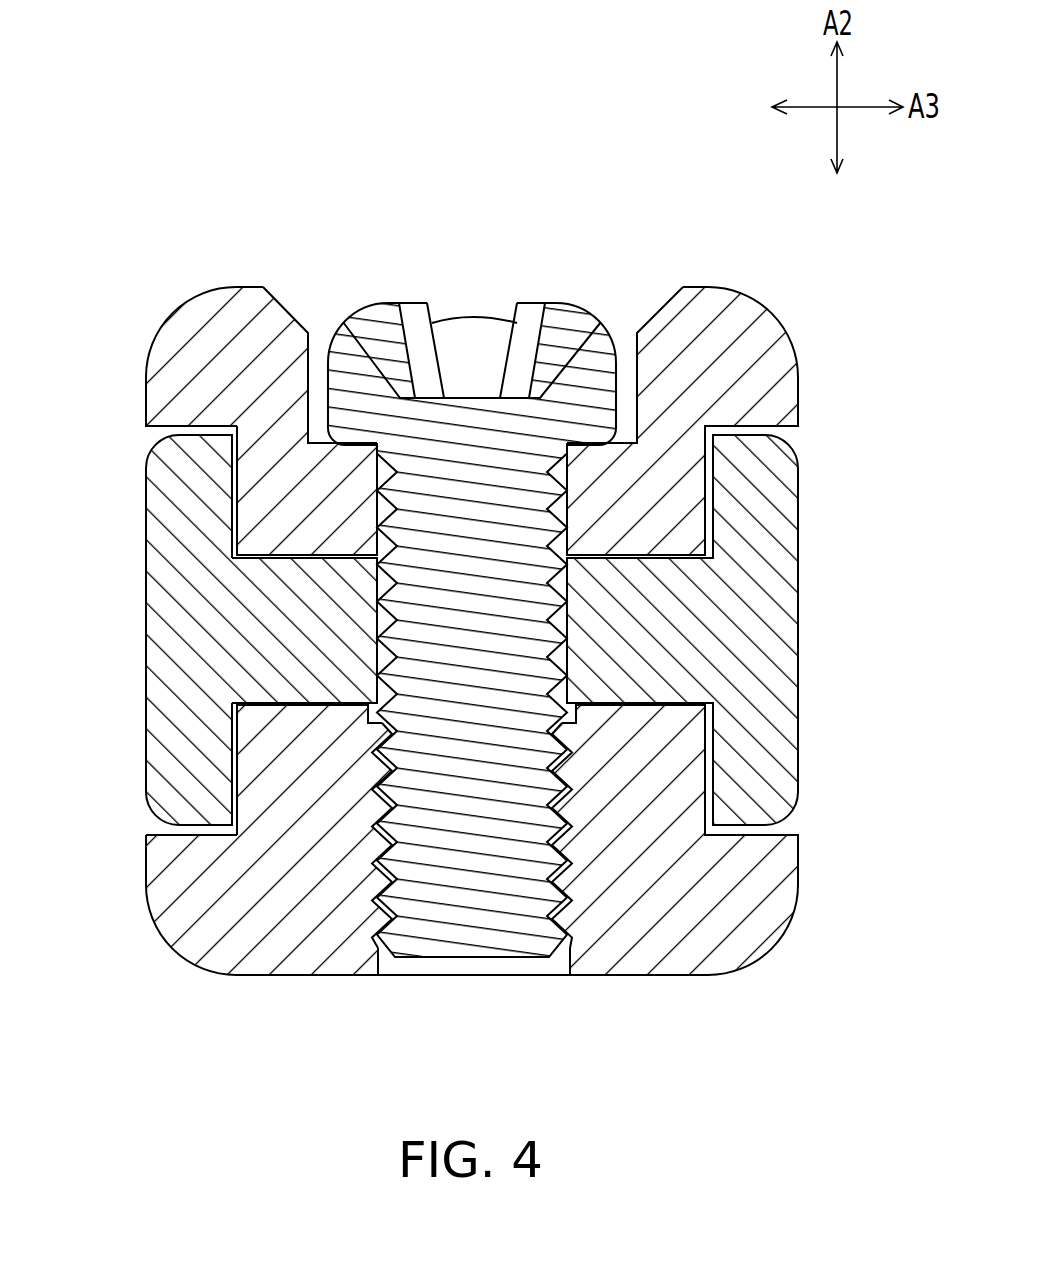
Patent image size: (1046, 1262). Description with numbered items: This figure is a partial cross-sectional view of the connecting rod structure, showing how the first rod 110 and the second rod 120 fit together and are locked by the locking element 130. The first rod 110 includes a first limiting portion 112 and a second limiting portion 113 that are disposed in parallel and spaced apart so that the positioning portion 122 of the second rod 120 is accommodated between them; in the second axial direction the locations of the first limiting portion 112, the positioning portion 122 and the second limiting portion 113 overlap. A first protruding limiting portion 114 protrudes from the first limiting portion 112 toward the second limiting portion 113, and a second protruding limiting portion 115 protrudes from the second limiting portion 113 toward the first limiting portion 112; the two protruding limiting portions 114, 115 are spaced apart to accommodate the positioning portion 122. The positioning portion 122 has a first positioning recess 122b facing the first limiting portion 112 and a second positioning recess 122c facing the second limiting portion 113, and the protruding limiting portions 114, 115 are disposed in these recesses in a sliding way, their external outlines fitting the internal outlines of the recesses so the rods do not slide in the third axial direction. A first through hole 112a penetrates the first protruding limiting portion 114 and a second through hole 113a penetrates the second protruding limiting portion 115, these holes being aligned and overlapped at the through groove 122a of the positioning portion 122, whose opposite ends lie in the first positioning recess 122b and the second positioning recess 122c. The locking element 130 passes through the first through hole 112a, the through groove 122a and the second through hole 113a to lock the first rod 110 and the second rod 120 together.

The first rod 110 is at (433, 658).
The first limiting portion 112 is at (472, 385).
The first through hole 112a is at (623, 398).
The second limiting portion 113 is at (433, 882).
The second through hole 113a is at (540, 878).
The first protruding limiting portion 114 is at (324, 518).
The second protruding limiting portion 115 is at (297, 757).
The second rod 120 is at (490, 630).
The positioning portion 122 is at (763, 635).
The through groove 122a is at (382, 623).
The first positioning recess 122b is at (233, 510).
The second positioning recess 122c is at (233, 763).
The locking element 130 is at (473, 590).